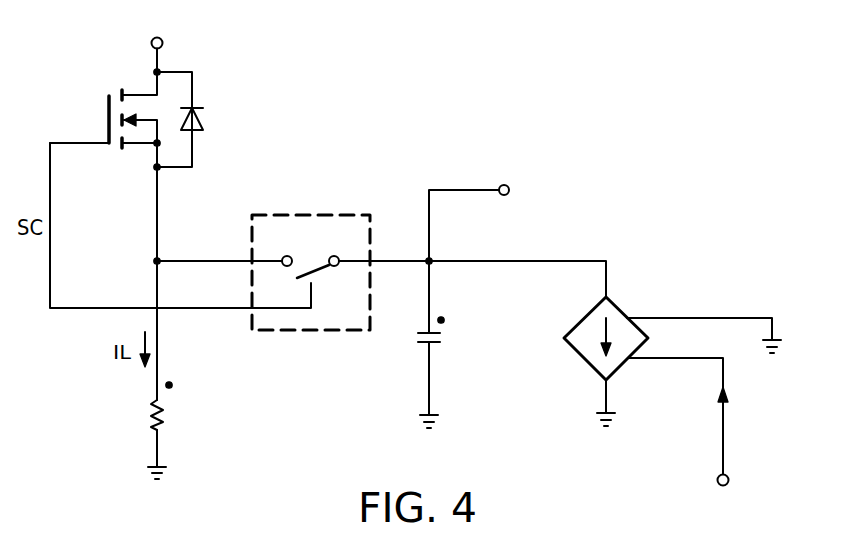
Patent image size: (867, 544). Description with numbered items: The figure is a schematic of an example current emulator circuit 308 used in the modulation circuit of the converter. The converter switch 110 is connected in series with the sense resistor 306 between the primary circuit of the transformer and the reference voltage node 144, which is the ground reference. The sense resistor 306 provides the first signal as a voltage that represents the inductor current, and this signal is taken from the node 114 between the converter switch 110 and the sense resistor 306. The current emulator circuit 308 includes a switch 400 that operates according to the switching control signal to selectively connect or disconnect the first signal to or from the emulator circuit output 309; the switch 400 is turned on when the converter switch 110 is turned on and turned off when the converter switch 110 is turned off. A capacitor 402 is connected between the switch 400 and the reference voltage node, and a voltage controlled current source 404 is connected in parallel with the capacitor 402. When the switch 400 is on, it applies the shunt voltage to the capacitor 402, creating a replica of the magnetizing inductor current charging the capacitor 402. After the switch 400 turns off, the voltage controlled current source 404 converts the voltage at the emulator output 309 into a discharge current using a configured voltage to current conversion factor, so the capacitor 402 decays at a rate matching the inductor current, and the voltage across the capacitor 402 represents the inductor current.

The converter switch 110 is at (108, 108).
The switch node 114 is at (157, 213).
The reference voltage node 144 is at (157, 445).
The sense resistor 306 is at (150, 413).
The current emulator circuit 308 is at (562, 82).
The emulator circuit output 309 is at (464, 190).
The switch 400 is at (312, 333).
The capacitor 402 is at (440, 338).
The voltage controlled current source 404 is at (585, 362).